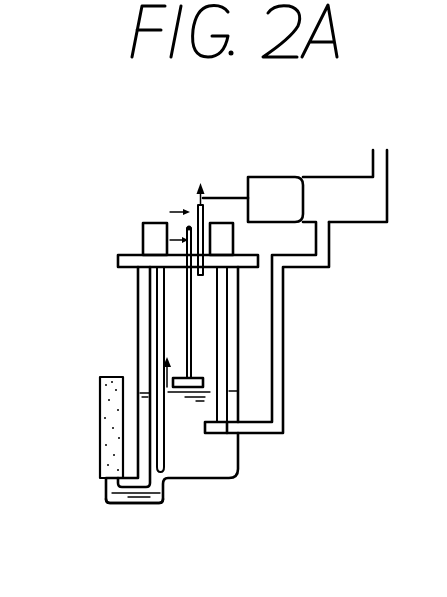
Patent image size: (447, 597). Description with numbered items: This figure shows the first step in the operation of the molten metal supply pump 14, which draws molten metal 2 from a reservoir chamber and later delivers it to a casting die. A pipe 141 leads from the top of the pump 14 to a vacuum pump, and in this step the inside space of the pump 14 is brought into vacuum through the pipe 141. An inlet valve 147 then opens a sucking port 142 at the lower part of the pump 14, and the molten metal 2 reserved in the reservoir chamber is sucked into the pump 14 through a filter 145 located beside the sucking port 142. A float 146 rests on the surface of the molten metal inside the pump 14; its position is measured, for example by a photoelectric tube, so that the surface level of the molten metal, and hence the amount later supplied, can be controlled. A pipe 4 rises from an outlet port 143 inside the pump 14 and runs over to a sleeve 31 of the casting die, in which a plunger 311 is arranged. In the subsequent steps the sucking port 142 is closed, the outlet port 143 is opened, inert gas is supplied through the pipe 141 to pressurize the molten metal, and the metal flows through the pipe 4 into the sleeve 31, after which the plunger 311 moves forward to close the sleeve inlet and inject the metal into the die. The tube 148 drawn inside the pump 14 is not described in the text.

The molten metal 2 is at (208, 460).
The pipe 4 is at (300, 262).
The molten metal supply pump 14 is at (308, 364).
The sleeve 31 is at (343, 203).
The plunger 311 is at (275, 203).
The pipe 141 is at (197, 218).
The sucking port 142 is at (170, 484).
The outlet port 143 is at (223, 433).
The filter 145 is at (113, 377).
The float 146 is at (188, 320).
The inlet valve 147 is at (153, 427).
The gas supply tube 148 is at (238, 389).